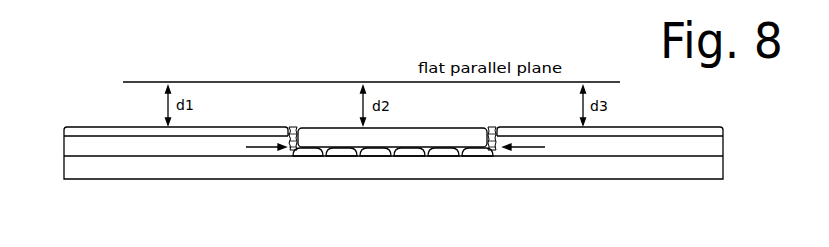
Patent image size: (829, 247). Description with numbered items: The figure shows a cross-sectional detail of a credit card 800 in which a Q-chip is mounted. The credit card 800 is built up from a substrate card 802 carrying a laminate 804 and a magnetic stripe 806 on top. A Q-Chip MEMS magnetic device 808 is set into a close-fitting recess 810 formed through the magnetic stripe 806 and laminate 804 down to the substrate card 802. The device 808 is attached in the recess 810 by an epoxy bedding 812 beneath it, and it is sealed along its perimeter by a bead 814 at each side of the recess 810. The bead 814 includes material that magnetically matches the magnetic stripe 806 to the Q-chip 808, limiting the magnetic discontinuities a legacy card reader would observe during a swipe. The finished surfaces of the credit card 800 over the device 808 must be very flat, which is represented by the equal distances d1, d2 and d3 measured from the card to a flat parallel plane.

The credit card 800 is at (104, 54).
The substrate card 802 is at (133, 178).
The laminate 804 is at (75, 146).
The magnetic stripe 806 is at (100, 126).
The Q-Chip MEMS magnetic device 808 is at (462, 130).
The close-fitting recess 810 is at (412, 147).
The epoxy bedding 812 is at (446, 157).
The bead 814 is at (295, 127).